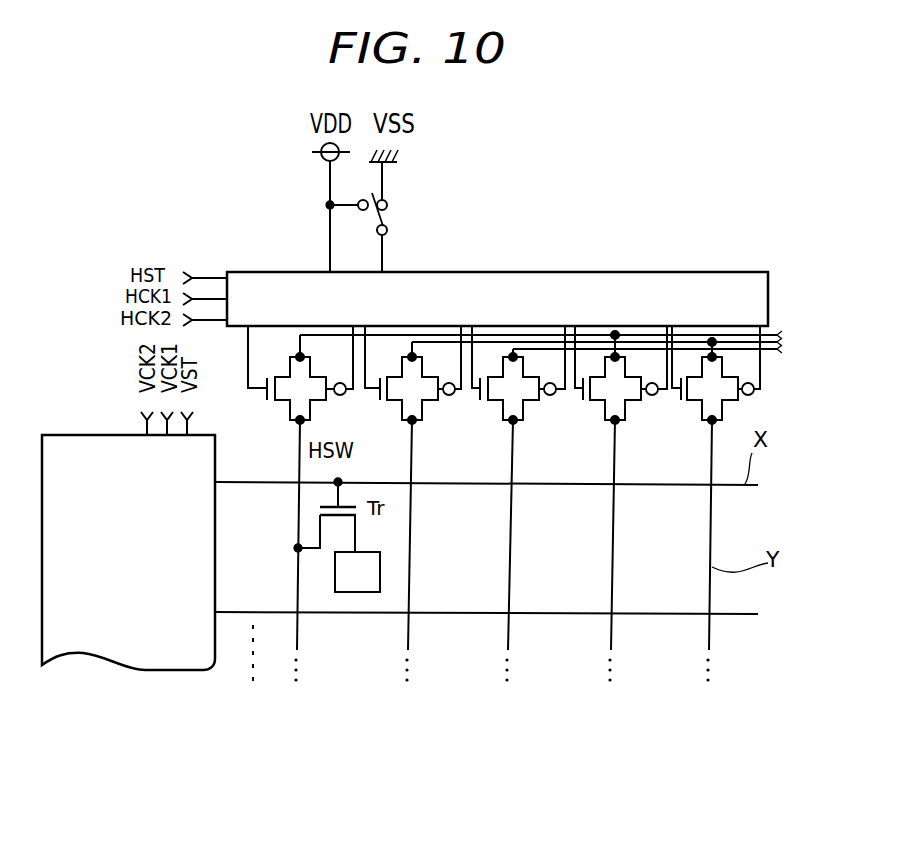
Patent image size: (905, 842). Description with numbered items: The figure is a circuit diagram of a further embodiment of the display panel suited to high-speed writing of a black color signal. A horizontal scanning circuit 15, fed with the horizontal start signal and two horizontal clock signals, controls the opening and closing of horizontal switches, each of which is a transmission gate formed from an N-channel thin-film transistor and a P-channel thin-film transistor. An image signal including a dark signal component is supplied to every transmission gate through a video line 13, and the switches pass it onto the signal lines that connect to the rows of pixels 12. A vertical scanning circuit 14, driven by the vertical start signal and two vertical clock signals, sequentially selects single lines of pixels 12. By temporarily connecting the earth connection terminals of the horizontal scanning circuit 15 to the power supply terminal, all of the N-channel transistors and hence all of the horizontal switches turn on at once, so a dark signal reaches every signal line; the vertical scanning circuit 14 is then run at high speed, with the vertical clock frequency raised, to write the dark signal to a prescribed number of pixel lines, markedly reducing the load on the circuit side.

The pixel 12 is at (366, 592).
The video line 13 is at (763, 354).
The vertical scanning circuit 14 is at (148, 664).
The horizontal scanning circuit 15 is at (578, 272).